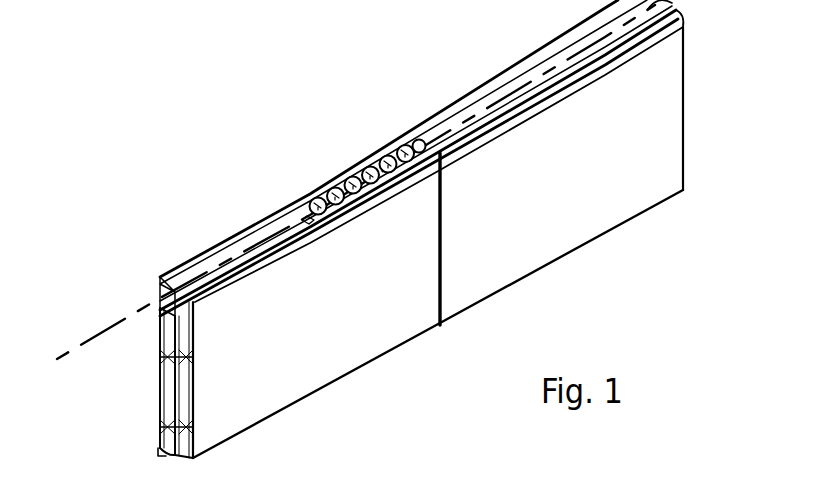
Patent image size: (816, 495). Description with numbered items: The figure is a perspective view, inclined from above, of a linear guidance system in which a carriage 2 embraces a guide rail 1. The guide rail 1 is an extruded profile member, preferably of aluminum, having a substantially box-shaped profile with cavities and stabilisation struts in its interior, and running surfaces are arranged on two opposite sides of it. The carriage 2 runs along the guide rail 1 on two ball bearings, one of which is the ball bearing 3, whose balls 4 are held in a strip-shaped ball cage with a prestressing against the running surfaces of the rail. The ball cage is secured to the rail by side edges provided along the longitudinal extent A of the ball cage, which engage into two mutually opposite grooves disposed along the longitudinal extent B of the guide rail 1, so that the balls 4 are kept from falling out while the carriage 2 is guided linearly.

The guide rail 1 is at (322, 332).
The carriage 2 is at (585, 205).
The ball bearing 3 is at (349, 166).
The balls 4 is at (399, 166).
The longitudinal extent of the ball cage A is at (325, 128).
The longitudinal extent of the guide rail B is at (218, 262).